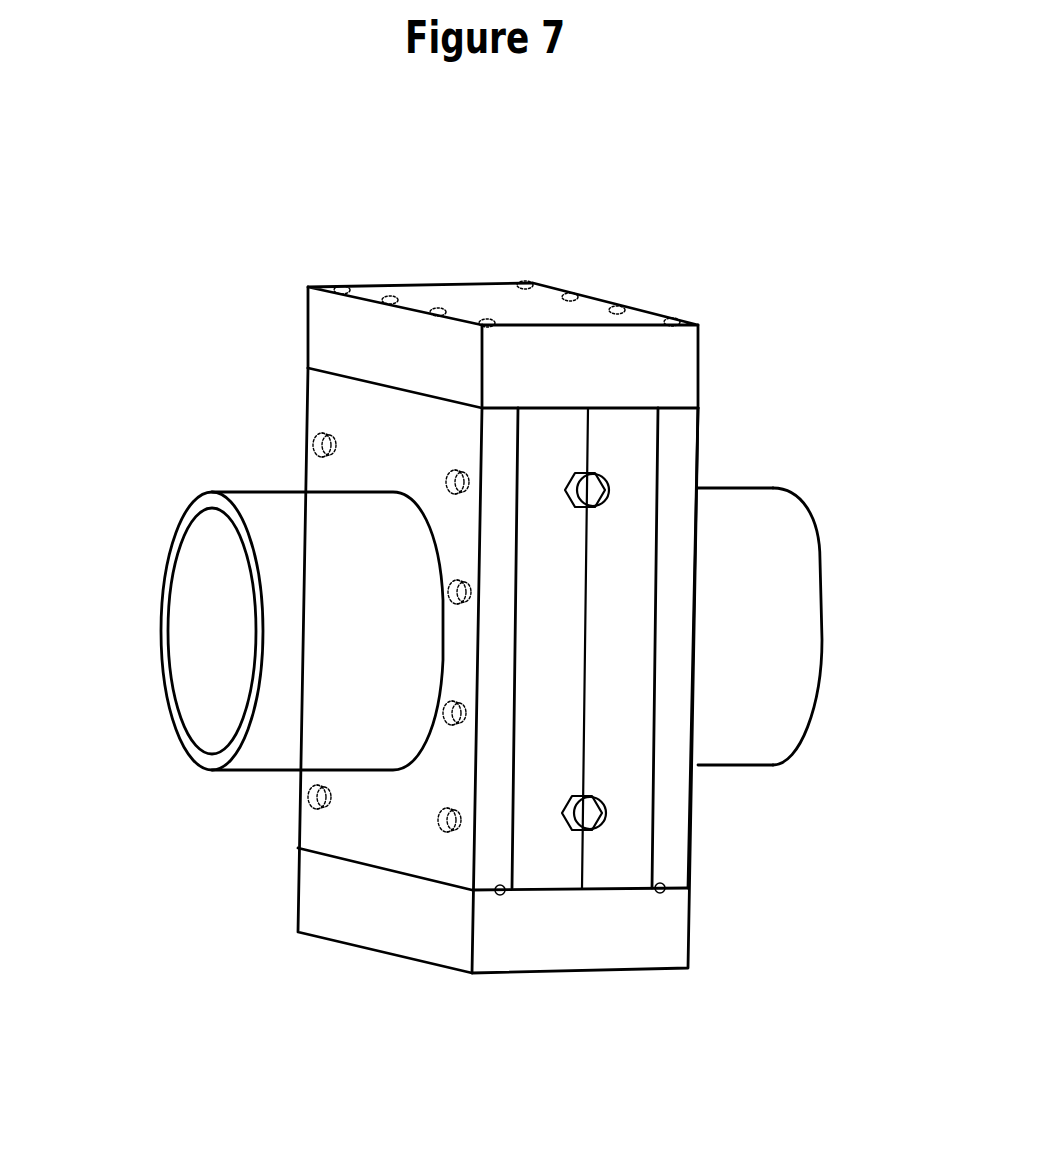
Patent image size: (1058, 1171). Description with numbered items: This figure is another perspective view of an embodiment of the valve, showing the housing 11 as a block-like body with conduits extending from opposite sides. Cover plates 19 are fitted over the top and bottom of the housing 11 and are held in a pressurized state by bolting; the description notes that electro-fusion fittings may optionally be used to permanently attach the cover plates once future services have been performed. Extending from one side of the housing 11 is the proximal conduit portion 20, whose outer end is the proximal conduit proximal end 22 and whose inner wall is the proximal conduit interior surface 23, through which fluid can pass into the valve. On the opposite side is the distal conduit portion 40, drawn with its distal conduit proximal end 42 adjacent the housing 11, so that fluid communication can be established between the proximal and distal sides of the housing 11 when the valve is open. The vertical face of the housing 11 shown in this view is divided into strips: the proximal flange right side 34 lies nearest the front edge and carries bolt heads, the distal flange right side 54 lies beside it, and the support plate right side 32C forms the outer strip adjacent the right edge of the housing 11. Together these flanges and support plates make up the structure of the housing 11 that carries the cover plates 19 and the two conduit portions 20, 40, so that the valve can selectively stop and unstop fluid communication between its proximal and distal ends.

The housing 11 is at (578, 855).
The cover plates 19 is at (323, 329).
The proximal conduit portion 20 is at (297, 678).
The proximal conduit proximal end 22 is at (182, 517).
The proximal conduit interior surface 23 is at (205, 634).
The support plate right side 32C is at (678, 437).
The proximal flange right side 34 is at (565, 737).
The distal conduit portion 40 is at (758, 687).
The distal conduit proximal end 42 is at (822, 655).
The distal flange right side 54 is at (642, 515).